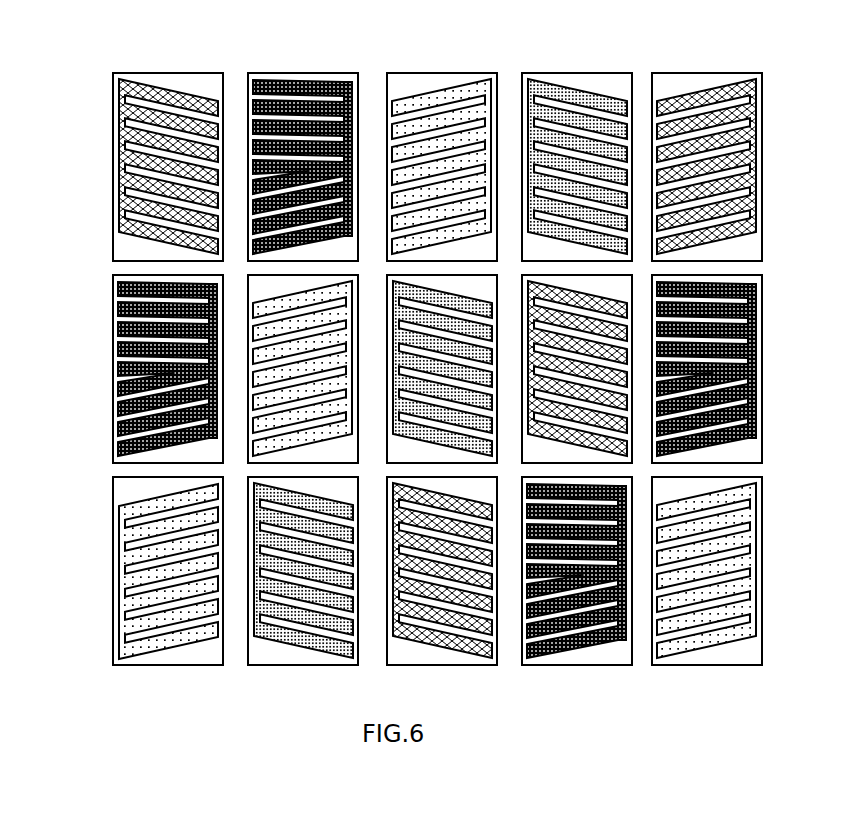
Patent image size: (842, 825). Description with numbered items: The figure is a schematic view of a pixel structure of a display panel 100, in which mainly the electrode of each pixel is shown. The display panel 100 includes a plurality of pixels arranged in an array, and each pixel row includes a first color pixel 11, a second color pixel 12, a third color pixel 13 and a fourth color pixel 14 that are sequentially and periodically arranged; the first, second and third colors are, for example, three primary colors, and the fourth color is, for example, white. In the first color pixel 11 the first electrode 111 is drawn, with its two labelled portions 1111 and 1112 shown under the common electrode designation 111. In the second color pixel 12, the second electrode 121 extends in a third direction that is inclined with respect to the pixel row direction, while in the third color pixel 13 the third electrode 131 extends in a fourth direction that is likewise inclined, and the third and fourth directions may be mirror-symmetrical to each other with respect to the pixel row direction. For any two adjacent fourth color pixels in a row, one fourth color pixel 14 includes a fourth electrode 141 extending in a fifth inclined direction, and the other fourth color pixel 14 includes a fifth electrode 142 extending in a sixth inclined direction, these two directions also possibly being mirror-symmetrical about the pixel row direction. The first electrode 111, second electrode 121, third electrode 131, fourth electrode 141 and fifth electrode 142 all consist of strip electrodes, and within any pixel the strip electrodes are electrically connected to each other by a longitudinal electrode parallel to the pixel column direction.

The display panel 100 is at (398, 694).
The first color pixel 11 is at (312, 76).
The first electrode 111 is at (126, 369).
The first electrode upper part 1111 is at (120, 328).
The first electrode lower part 1112 is at (120, 425).
The second color pixel 12 is at (442, 73).
The second electrode 121 is at (132, 555).
The third color pixel 13 is at (565, 73).
The third electrode 131 is at (617, 102).
The fourth color pixel 14 is at (180, 82).
The fourth electrode 141 is at (125, 158).
The fifth electrode 142 is at (695, 95).